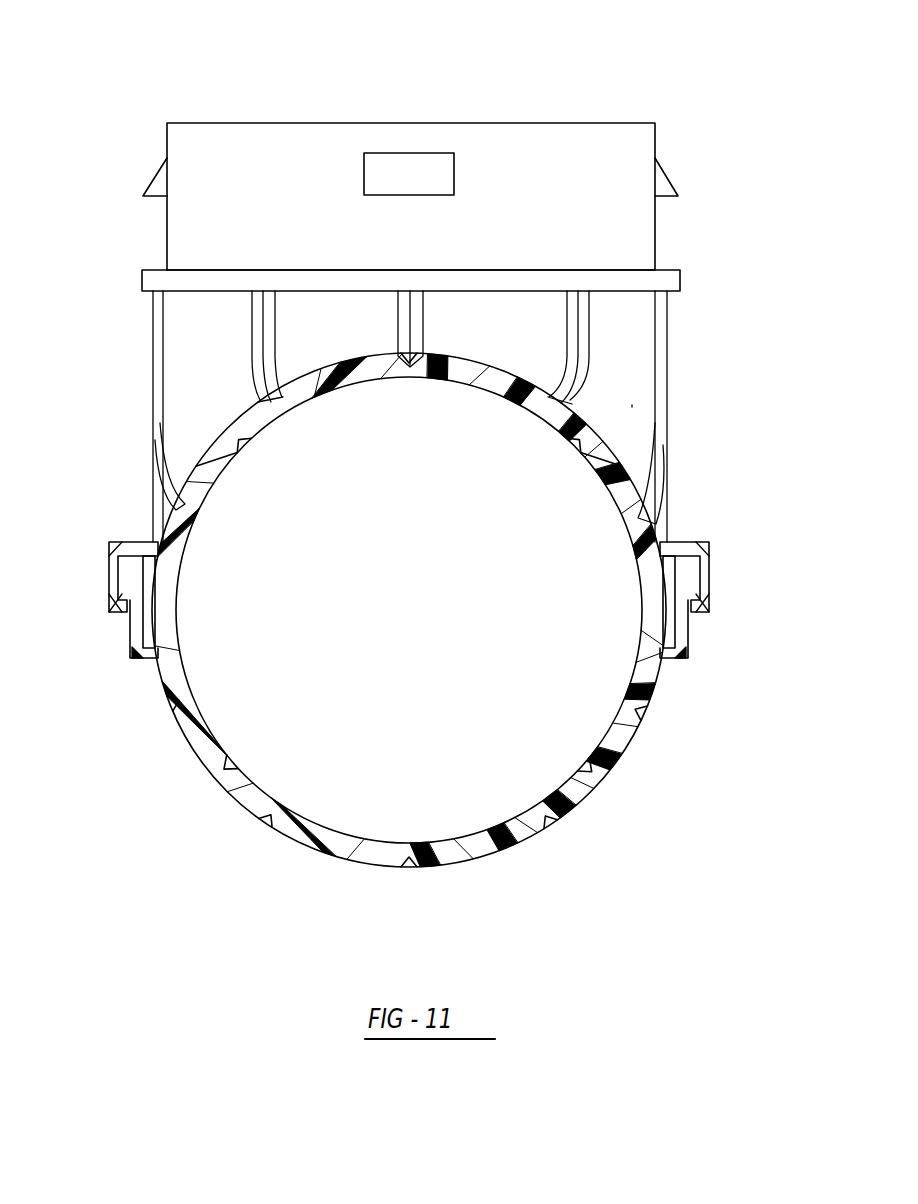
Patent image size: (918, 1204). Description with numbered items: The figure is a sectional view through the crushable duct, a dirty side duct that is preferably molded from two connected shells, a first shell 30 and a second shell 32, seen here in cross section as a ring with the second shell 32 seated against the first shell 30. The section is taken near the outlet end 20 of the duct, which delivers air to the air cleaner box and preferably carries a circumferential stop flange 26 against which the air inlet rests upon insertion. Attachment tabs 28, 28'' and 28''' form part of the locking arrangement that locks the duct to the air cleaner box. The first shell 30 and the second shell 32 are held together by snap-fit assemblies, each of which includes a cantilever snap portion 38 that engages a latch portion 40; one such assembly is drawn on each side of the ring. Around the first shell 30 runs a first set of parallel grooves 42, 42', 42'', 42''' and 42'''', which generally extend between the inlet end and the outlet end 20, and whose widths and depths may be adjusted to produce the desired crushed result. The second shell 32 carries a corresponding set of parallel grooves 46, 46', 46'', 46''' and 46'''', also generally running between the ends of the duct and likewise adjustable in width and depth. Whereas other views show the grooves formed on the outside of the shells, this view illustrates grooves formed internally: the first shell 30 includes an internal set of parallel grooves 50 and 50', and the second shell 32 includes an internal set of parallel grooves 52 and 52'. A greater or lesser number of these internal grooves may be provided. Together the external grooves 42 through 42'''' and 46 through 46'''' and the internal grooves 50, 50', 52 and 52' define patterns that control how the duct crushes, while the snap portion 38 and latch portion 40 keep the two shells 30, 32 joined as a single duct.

The outlet end 20 is at (175, 231).
The circumferential stop flange 26 is at (667, 282).
The attachment tab 28 is at (114, 165).
The attachment tab 28'' is at (713, 160).
The attachment tab 28''' is at (424, 113).
The first shell 30 is at (497, 853).
The second shell 32 is at (632, 407).
The cantilever snap portion 38 is at (130, 620).
The latch portion 40 is at (109, 575).
The parallel groove 42 is at (707, 716).
The parallel groove 42' is at (633, 820).
The parallel groove 42'' is at (376, 898).
The parallel groove 42''' is at (249, 860).
The parallel groove 42'''' is at (143, 761).
The parallel groove 46 is at (709, 416).
The parallel groove 46' is at (678, 347).
The parallel groove 46'' is at (597, 329).
The parallel groove 46''' is at (172, 347).
The parallel groove 46'''' is at (116, 416).
The internal parallel groove 50 is at (258, 471).
The internal parallel groove 50' is at (554, 472).
The internal parallel groove 52 is at (269, 737).
The internal parallel groove 52' is at (569, 715).